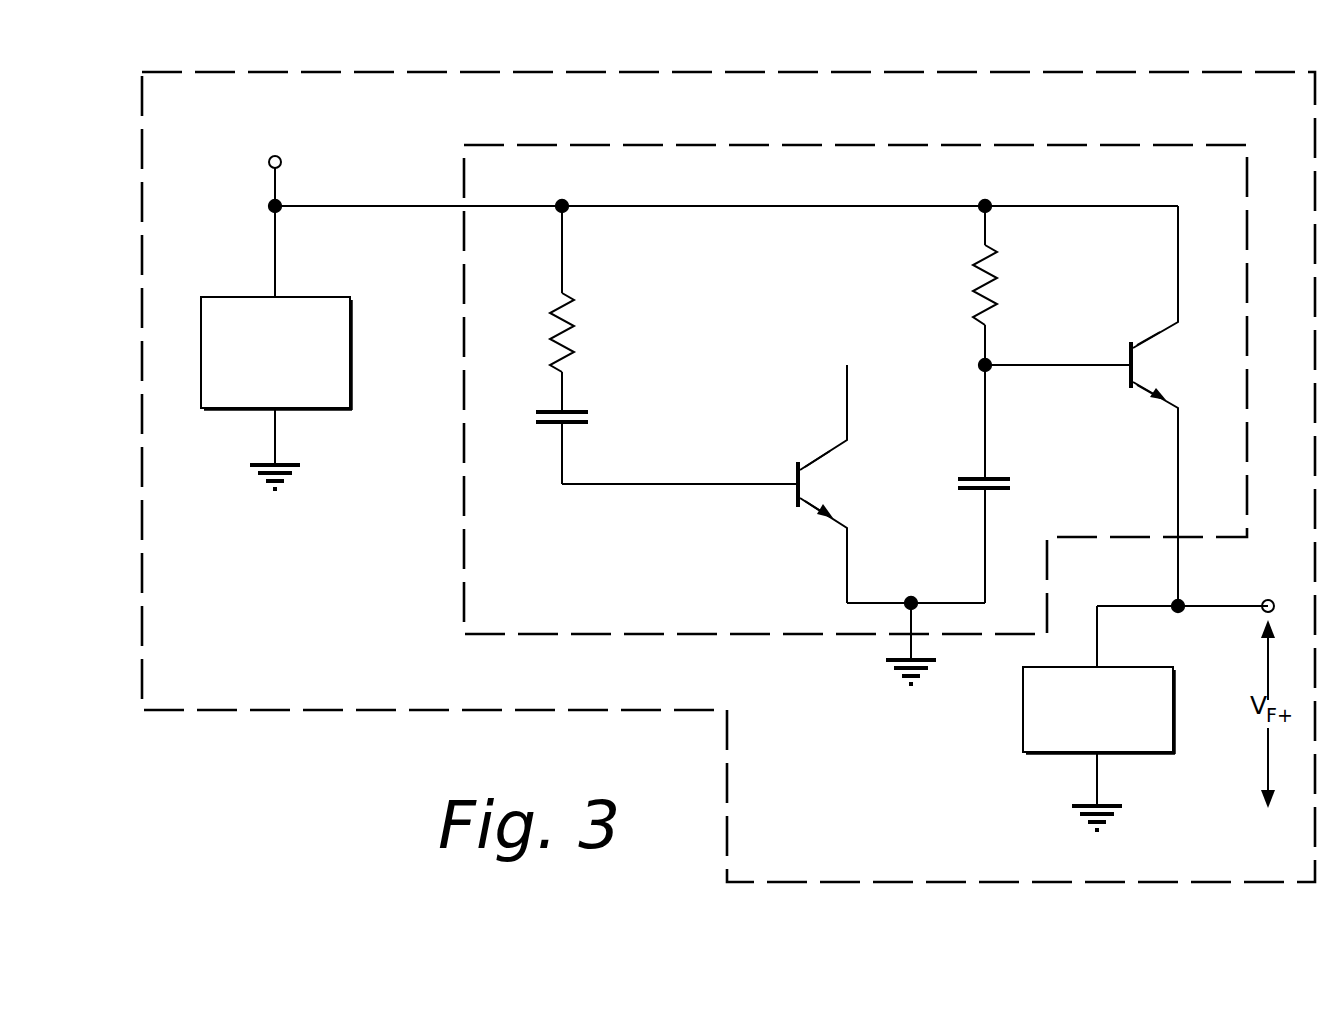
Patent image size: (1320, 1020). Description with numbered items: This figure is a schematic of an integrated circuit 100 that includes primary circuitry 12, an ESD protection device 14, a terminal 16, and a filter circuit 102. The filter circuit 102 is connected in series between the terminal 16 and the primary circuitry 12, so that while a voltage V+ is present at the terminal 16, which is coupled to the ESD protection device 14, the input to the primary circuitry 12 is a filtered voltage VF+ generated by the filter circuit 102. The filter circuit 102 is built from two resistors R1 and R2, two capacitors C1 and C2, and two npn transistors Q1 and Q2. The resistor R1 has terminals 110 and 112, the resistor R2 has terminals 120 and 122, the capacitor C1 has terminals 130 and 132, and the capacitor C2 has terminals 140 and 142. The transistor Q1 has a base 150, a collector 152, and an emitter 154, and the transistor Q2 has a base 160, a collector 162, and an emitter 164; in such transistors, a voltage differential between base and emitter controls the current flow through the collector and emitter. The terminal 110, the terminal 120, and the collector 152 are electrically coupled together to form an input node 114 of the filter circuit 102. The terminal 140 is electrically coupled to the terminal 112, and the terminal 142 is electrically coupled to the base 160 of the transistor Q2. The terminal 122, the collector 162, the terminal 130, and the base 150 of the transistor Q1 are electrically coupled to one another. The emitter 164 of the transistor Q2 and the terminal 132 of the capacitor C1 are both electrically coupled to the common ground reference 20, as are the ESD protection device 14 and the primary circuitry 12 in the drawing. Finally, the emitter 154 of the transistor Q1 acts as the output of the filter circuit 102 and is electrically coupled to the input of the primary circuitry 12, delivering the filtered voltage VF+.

The integrated circuit 100 is at (826, 72).
The filter circuit 102 is at (926, 144).
The primary circuitry 12 is at (1023, 723).
The ESD protection device 14 is at (352, 348).
The terminal 16 is at (268, 161).
The common ground reference 20 is at (298, 479).
The terminal of resistor R1 110 is at (565, 255).
The terminal of resistor R1 112 is at (565, 380).
The input node 114 is at (568, 204).
The terminal of resistor R2 120 is at (985, 203).
The terminal of resistor R2 122 is at (982, 345).
The terminal of capacitor C1 130 is at (988, 402).
The terminal of capacitor C1 132 is at (982, 548).
The terminal of capacitor C2 140 is at (558, 393).
The terminal of capacitor C2 142 is at (560, 448).
The base of transistor Q1 150 is at (1128, 365).
The collector of transistor Q1 152 is at (1140, 344).
The emitter of transistor Q1 154 is at (1136, 392).
The base of transistor Q2 160 is at (797, 481).
The collector of transistor Q2 162 is at (806, 462).
The emitter of transistor Q2 164 is at (806, 514).
The resistor R1 is at (995, 286).
The resistor R2 is at (572, 328).
The capacitor C1 is at (1006, 479).
The capacitor C2 is at (588, 419).
The npn transistor Q1 is at (1138, 359).
The npn transistor Q2 is at (804, 483).